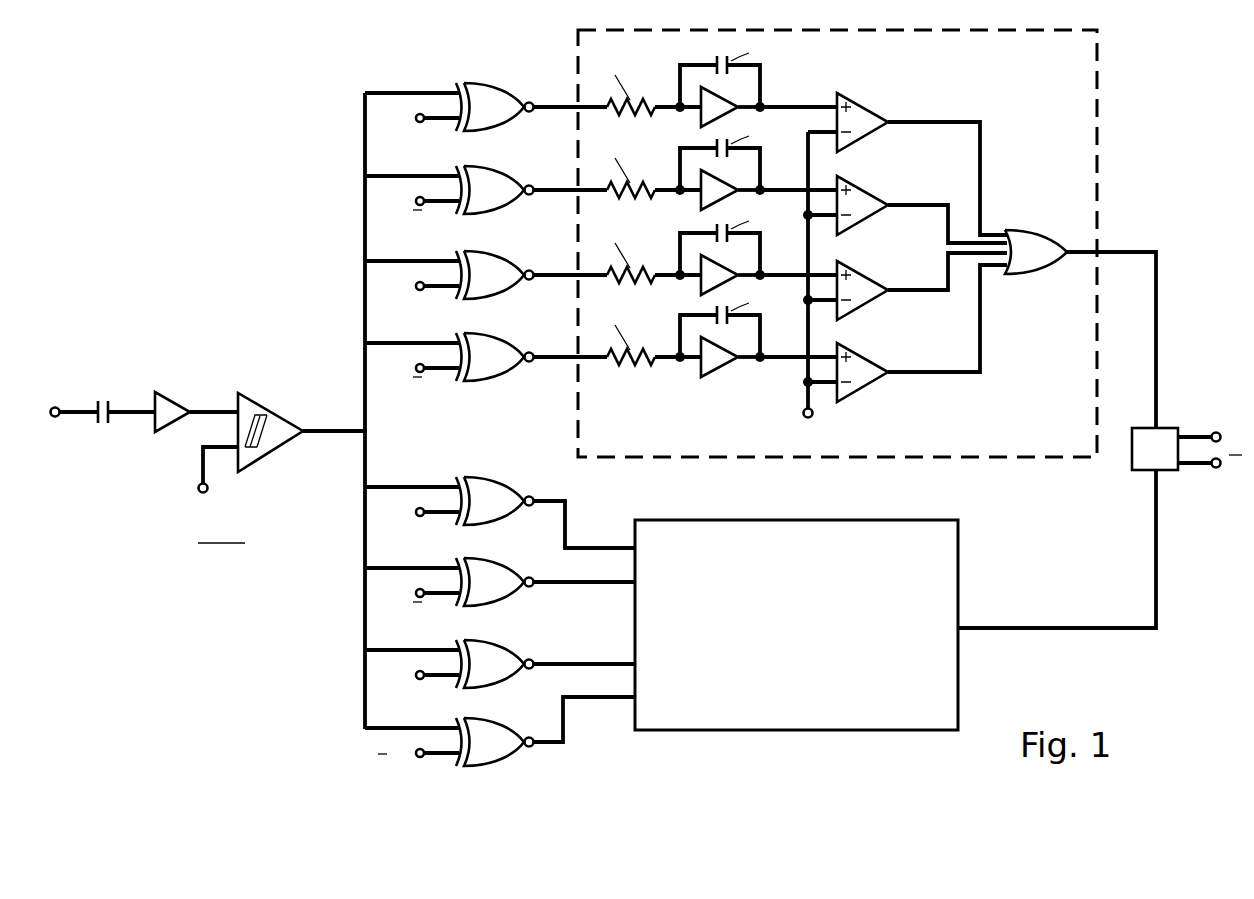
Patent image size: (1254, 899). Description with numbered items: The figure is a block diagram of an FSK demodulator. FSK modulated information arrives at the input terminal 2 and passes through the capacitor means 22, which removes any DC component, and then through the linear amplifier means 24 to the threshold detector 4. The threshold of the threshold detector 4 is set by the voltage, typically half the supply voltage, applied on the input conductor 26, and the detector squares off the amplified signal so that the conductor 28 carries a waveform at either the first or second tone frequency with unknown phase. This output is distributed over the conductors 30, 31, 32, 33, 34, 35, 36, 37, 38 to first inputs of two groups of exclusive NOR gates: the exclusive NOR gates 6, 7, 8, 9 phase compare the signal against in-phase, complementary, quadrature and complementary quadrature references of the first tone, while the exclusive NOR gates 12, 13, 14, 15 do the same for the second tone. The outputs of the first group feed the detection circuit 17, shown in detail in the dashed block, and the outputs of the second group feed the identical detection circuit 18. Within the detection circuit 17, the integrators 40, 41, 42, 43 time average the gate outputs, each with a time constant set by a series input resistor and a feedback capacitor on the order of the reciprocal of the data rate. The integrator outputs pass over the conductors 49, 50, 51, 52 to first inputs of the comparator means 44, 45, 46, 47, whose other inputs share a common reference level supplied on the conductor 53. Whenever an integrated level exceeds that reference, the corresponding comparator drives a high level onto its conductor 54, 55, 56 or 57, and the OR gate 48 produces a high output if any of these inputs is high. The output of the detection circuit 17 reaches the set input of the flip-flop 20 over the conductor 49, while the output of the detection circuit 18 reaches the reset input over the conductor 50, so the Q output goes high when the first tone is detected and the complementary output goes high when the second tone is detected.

The input terminal 2 is at (55, 418).
The capacitor means 22 is at (110, 400).
The linear amplifier means 24 is at (175, 395).
The threshold detector 4 is at (262, 407).
The input conductor 26 is at (200, 465).
The conductor 28 is at (331, 438).
The conductor 30 is at (363, 380).
The conductor 31 is at (414, 92).
The conductor 32 is at (414, 175).
The conductor 33 is at (414, 260).
The conductor 34 is at (414, 342).
The conductor 35 is at (414, 486).
The conductor 36 is at (414, 567).
The conductor 37 is at (414, 649).
The conductor 38 is at (414, 727).
The exclusive NOR gate 6 is at (486, 88).
The exclusive NOR gate 7 is at (486, 171).
The exclusive NOR gate 8 is at (486, 256).
The exclusive NOR gate 9 is at (486, 338).
The exclusive NOR gate 12 is at (486, 482).
The exclusive NOR gate 13 is at (486, 563).
The exclusive NOR gate 14 is at (486, 645).
The exclusive NOR gate 15 is at (486, 723).
The detection circuit 17 is at (915, 458).
The detection circuit 18 is at (945, 575).
The flip-flop 20 is at (1140, 472).
The integrator 40 is at (700, 118).
The integrator 41 is at (700, 201).
The integrator 42 is at (700, 286).
The integrator 43 is at (700, 368).
The comparator means 44 is at (863, 116).
The comparator means 45 is at (863, 198).
The comparator means 46 is at (864, 283).
The comparator means 47 is at (864, 367).
The OR gate 48 is at (1036, 237).
The conductor 49 is at (785, 101).
The conductor 50 is at (785, 184).
The conductor 51 is at (784, 270).
The conductor 52 is at (784, 352).
The conductor 53 is at (803, 405).
The conductor 54 is at (982, 188).
The conductor 55 is at (925, 204).
The conductor 56 is at (910, 294).
The conductor 57 is at (982, 332).